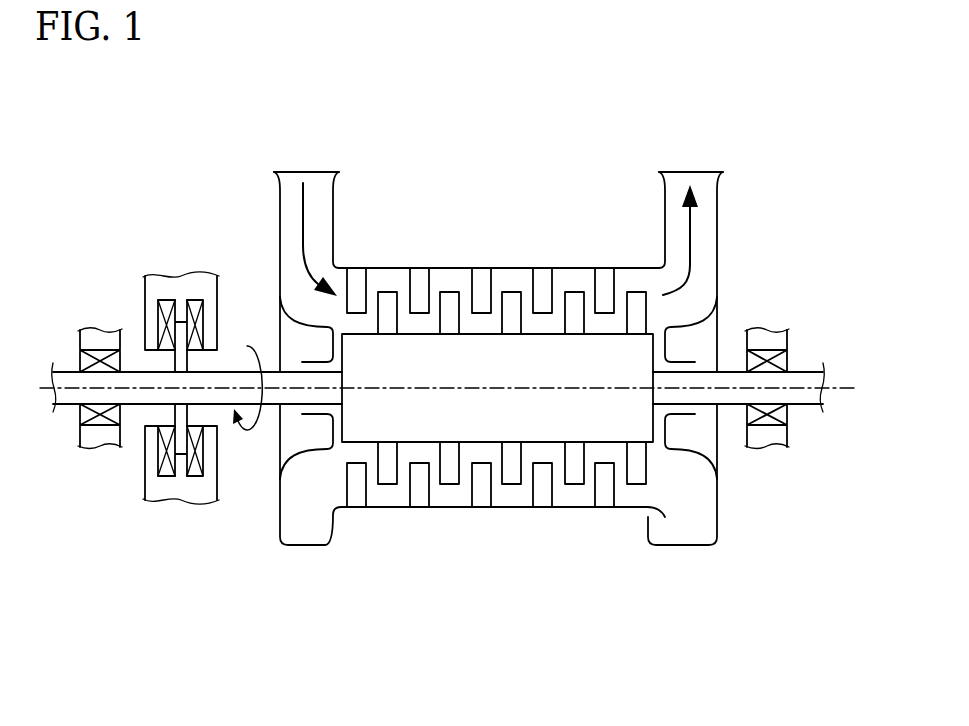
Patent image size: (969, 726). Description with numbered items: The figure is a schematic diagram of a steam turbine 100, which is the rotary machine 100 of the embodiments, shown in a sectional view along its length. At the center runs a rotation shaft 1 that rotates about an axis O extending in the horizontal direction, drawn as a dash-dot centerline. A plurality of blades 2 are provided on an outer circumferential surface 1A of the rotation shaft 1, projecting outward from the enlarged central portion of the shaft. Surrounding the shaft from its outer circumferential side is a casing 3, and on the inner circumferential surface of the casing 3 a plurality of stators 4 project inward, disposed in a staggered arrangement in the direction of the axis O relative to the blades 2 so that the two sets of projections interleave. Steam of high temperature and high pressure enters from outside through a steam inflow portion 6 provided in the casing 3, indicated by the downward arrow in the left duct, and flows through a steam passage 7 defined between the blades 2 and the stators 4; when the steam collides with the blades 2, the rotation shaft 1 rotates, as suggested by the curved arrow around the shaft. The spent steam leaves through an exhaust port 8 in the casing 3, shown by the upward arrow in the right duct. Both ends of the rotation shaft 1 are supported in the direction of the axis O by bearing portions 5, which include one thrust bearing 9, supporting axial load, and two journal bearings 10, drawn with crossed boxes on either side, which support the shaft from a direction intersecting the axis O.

The steam turbine 100 is at (769, 168).
The rotation shaft 1 is at (731, 404).
The outer circumferential surface 1A is at (732, 370).
The axis O is at (838, 390).
The blades 2 is at (513, 477).
The casing 3 is at (572, 508).
The stators 4 is at (482, 277).
The bearing portion 5 is at (162, 222).
The steam inflow portion 6 is at (333, 213).
The steam passage 7 is at (513, 280).
The exhaust port 8 is at (717, 207).
The thrust bearing 9 is at (133, 289).
The journal bearing 10 is at (68, 334).